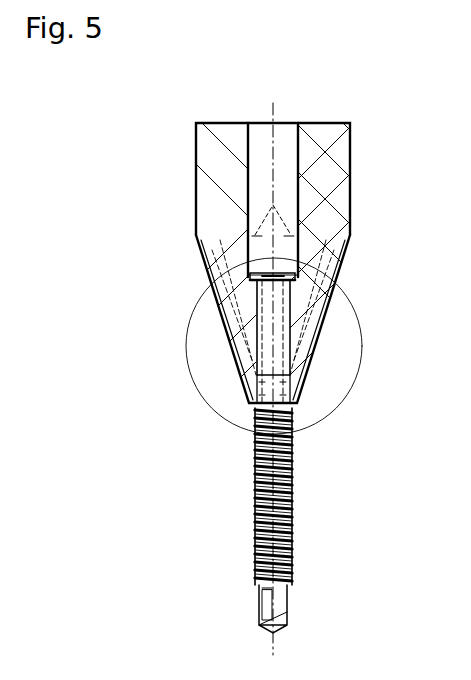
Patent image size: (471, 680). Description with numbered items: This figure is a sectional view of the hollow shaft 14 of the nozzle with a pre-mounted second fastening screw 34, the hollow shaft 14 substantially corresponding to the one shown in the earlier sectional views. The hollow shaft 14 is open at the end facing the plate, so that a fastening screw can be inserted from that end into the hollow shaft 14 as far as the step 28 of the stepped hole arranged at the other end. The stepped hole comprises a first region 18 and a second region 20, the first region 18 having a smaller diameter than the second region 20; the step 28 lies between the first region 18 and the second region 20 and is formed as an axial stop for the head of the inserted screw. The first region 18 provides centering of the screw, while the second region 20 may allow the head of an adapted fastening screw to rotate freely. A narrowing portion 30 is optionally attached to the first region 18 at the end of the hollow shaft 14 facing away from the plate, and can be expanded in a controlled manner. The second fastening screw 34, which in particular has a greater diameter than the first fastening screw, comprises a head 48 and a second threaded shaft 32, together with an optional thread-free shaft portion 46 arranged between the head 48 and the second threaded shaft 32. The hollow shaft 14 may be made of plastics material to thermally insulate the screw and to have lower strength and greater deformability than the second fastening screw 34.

The hollow shaft 14 is at (198, 170).
The head 48 is at (272, 213).
The second region 20 is at (299, 190).
The step 28 is at (300, 279).
The thread-free shaft portion 46 is at (250, 333).
The first region 18 is at (300, 359).
The narrowing portion 30 is at (258, 394).
The second threaded shaft 32 is at (257, 527).
The second fastening screw 34 is at (327, 552).